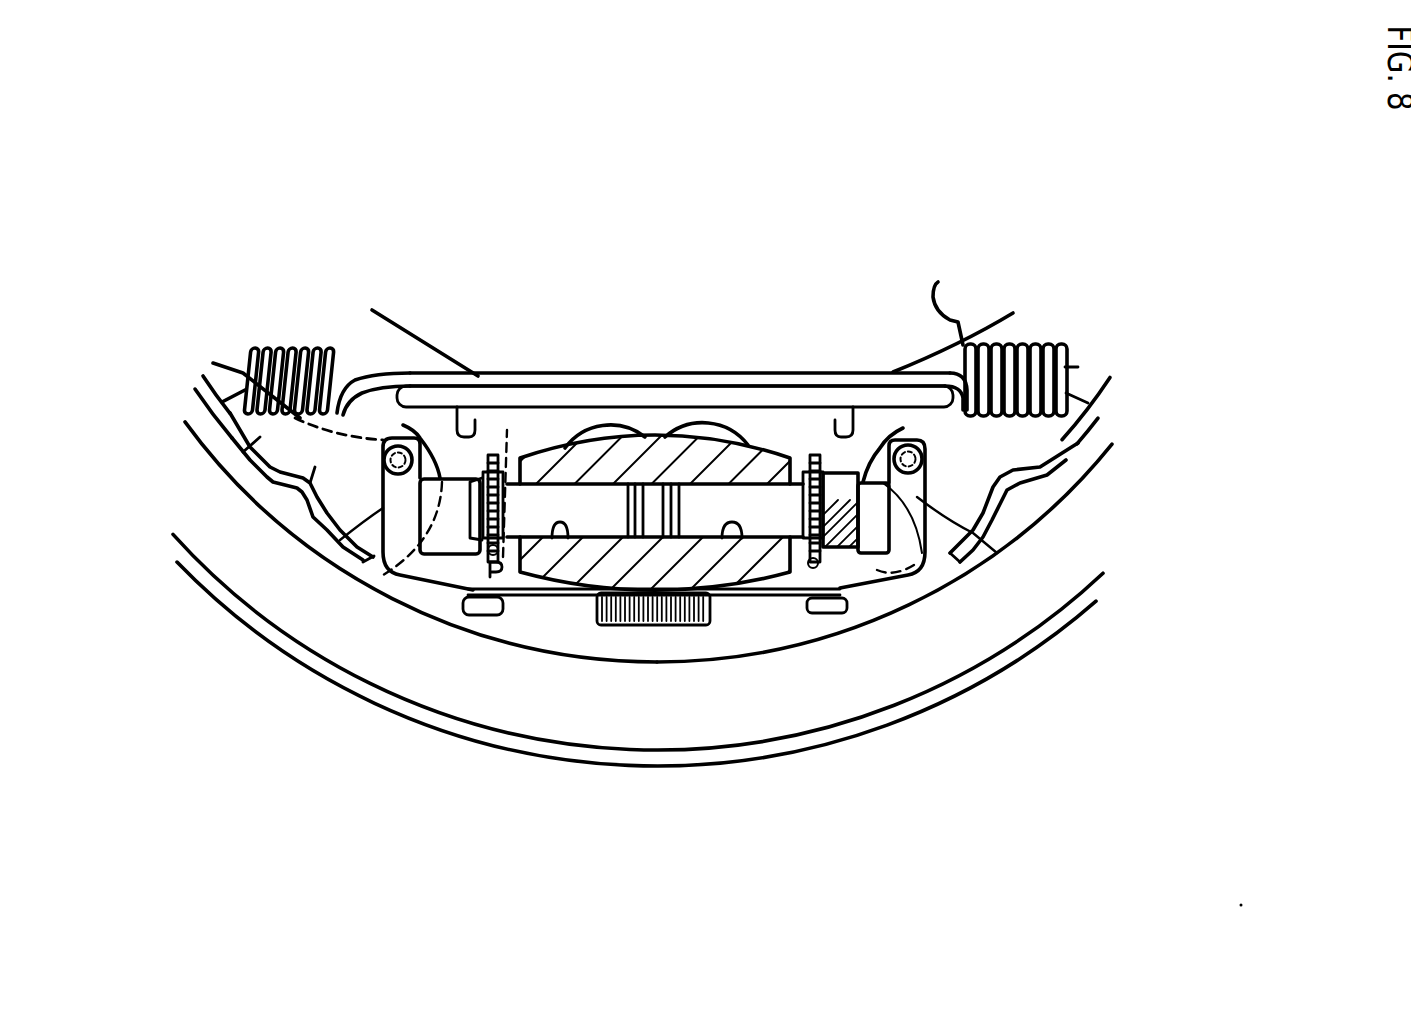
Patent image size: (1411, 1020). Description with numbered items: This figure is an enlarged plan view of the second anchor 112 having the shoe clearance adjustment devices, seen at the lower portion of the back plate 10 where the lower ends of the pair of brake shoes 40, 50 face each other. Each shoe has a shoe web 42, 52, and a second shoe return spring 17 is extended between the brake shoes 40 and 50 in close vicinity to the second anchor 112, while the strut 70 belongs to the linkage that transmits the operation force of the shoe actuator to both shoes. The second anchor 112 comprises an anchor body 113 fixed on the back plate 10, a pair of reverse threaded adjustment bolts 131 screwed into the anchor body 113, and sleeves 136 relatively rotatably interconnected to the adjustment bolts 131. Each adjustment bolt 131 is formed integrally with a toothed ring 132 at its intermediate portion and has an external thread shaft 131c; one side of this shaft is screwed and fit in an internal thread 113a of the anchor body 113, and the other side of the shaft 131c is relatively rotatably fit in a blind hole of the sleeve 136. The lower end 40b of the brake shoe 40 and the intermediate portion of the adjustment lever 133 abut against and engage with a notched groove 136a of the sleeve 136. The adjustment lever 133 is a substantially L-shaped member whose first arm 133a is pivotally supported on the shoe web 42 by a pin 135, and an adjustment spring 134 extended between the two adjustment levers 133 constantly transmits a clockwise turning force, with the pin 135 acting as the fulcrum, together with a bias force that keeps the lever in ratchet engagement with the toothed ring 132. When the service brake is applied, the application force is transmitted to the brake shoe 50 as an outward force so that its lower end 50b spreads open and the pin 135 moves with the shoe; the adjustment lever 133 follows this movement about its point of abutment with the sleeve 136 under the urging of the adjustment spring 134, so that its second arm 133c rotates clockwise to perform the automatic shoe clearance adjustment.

The back plate 10 is at (435, 728).
The second shoe return spring 17 is at (1032, 342).
The brake shoe 40 is at (195, 444).
The lower end of brake shoe 40b is at (317, 467).
The shoe web 42 is at (248, 463).
The brake shoe 50 is at (1096, 462).
The lower end of brake shoe 50b is at (973, 483).
The shoe web 52 is at (1063, 434).
The strut 70 is at (645, 373).
The second anchor 112 is at (762, 584).
The anchor body 113 is at (632, 633).
The internal thread 113a is at (560, 540).
The adjustment bolt 131 is at (510, 445).
The external thread shaft 131c is at (578, 500).
The toothed ring 132 is at (503, 557).
The adjustment lever 133 is at (427, 580).
The first arm 133a is at (383, 508).
The second arm 133c is at (505, 565).
The adjustment spring 134 is at (691, 626).
The pin 135 is at (388, 373).
The sleeve 136 is at (448, 479).
The notched groove 136a is at (397, 545).